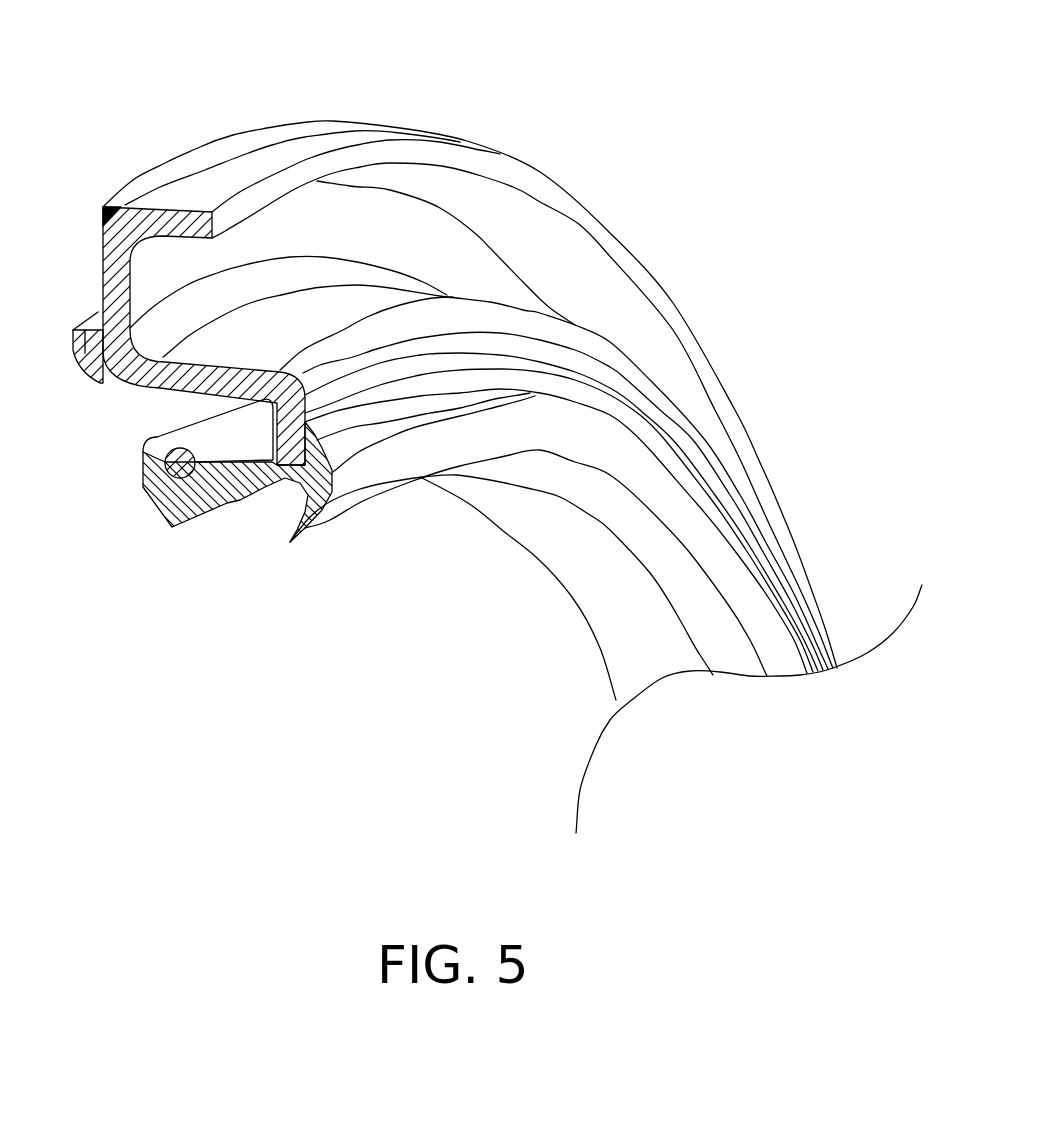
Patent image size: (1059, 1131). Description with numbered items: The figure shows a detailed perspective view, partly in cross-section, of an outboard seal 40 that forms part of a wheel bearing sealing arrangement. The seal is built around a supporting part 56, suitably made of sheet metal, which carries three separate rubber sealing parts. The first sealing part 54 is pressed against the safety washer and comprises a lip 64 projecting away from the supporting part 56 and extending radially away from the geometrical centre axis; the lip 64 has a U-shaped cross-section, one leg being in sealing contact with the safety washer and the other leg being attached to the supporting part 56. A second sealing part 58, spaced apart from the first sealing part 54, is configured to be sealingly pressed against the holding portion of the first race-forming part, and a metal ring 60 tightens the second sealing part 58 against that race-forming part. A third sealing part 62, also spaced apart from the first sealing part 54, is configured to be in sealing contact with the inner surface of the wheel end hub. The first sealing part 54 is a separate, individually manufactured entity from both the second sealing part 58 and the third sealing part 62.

The outboard seal 40 is at (583, 107).
The first sealing part 54 is at (103, 372).
The supporting part 56 is at (248, 203).
The second sealing part 58 is at (180, 500).
The metal ring 60 is at (217, 437).
The third sealing part 62 is at (117, 212).
The lip 64 is at (73, 336).